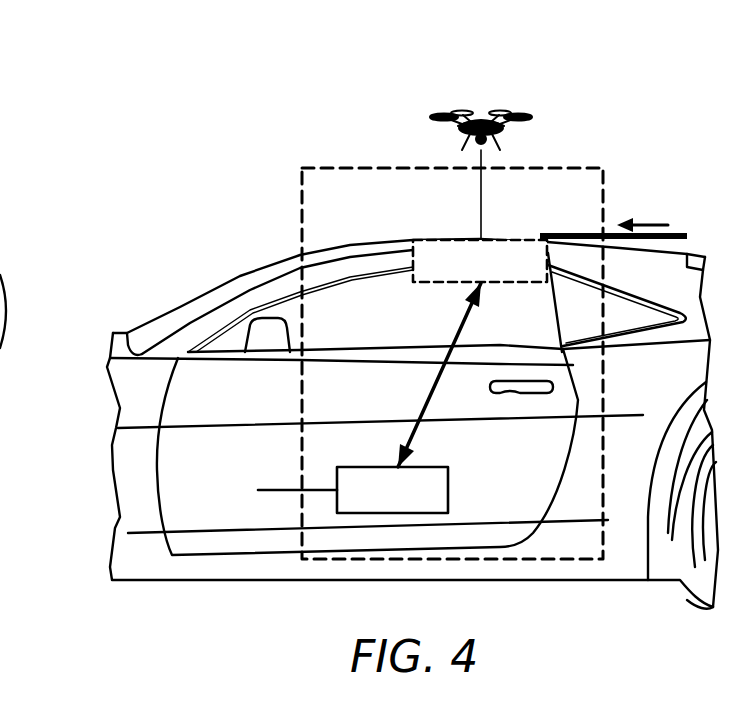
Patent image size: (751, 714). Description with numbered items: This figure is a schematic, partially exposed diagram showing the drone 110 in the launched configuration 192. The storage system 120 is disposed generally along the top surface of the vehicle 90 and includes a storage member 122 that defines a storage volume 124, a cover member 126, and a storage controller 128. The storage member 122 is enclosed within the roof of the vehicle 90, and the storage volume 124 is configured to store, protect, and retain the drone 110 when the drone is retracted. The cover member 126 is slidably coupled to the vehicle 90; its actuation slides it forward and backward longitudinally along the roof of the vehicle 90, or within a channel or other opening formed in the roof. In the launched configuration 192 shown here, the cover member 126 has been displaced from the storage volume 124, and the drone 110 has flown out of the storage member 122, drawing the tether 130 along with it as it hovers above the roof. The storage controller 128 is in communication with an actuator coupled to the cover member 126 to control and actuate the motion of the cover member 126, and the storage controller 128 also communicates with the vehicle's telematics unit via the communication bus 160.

The vehicle 90 is at (183, 490).
The drone 110 is at (467, 112).
The storage system 120 is at (347, 167).
The storage member 122 is at (437, 284).
The storage volume 124 is at (415, 257).
The cover member 126 is at (567, 233).
The storage controller 128 is at (413, 502).
The tether 130 is at (481, 187).
The communication bus 160 is at (272, 487).
The launched configuration 192 is at (439, 306).